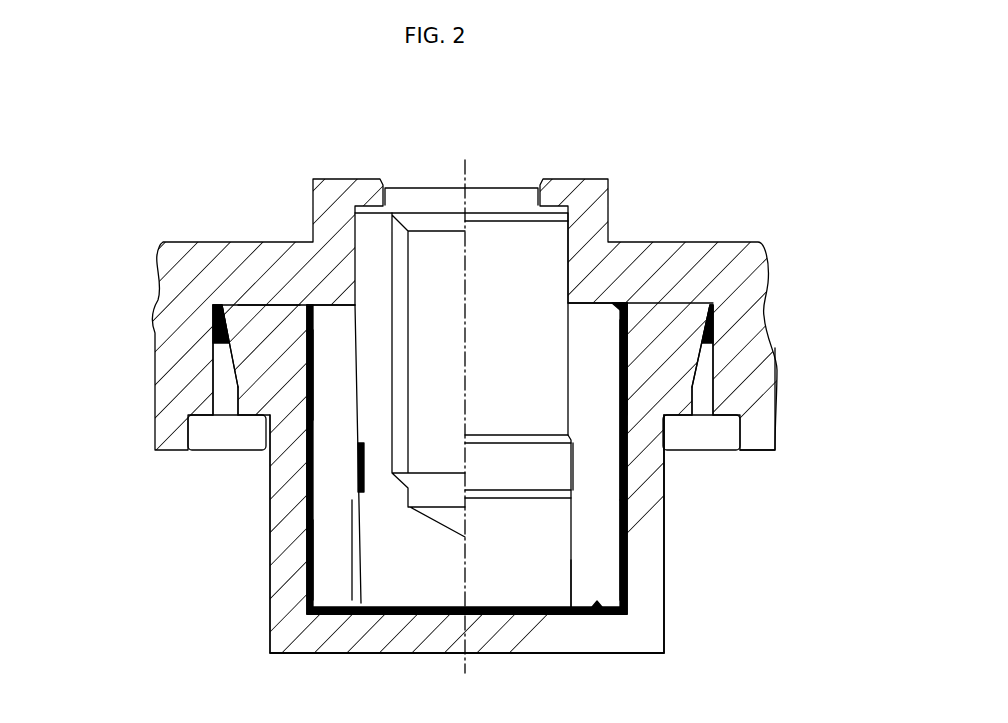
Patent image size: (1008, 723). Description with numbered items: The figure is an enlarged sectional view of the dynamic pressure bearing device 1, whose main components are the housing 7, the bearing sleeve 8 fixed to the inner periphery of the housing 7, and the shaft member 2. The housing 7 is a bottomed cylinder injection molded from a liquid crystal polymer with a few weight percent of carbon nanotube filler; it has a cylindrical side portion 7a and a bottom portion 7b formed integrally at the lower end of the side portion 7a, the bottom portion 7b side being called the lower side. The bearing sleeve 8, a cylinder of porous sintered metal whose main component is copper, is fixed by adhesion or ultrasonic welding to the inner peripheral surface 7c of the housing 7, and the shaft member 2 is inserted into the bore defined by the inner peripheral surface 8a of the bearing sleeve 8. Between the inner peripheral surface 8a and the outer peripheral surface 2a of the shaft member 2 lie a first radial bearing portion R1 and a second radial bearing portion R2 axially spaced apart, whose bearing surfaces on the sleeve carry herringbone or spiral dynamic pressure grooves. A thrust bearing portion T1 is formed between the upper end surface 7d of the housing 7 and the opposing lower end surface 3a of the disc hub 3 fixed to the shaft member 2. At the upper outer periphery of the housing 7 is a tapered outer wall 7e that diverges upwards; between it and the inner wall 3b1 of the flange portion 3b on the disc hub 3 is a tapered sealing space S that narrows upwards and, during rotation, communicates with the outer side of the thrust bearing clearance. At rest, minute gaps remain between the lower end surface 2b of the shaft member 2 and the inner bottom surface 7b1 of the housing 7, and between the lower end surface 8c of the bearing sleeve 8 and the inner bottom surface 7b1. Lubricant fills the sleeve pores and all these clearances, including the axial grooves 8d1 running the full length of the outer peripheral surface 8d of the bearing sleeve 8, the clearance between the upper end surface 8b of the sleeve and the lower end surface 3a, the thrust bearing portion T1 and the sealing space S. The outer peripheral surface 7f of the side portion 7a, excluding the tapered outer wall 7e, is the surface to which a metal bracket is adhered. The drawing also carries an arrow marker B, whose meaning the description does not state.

The dynamic pressure bearing device 1 is at (719, 207).
The shaft member 2 is at (573, 232).
The outer peripheral surface 2a is at (585, 555).
The lower end surface 2b is at (525, 617).
The disc hub 3 is at (205, 250).
The lower end surface 3a is at (213, 337).
The flange portion 3b is at (760, 408).
The inner wall 3b1 is at (706, 380).
The housing 7 is at (277, 460).
The side portion 7a is at (307, 497).
The bottom portion 7b is at (337, 643).
The inner bottom surface 7b1 is at (417, 598).
The inner peripheral surface 7c is at (607, 407).
The upper end surface 7d is at (275, 337).
The tapered outer wall 7e is at (698, 367).
The outer peripheral surface 7f is at (667, 610).
The bearing sleeve 8 is at (607, 350).
The inner peripheral surface 8a is at (553, 420).
The upper end surface 8b is at (615, 300).
The lower end surface 8c is at (598, 604).
The outer peripheral surface 8d is at (610, 525).
The axial groove 8d1 is at (340, 526).
The insertion direction B is at (268, 152).
The thrust bearing portion T1 is at (254, 300).
The first radial bearing portion R1 is at (340, 376).
The second radial bearing portion R2 is at (345, 550).
The sealing space S is at (715, 320).